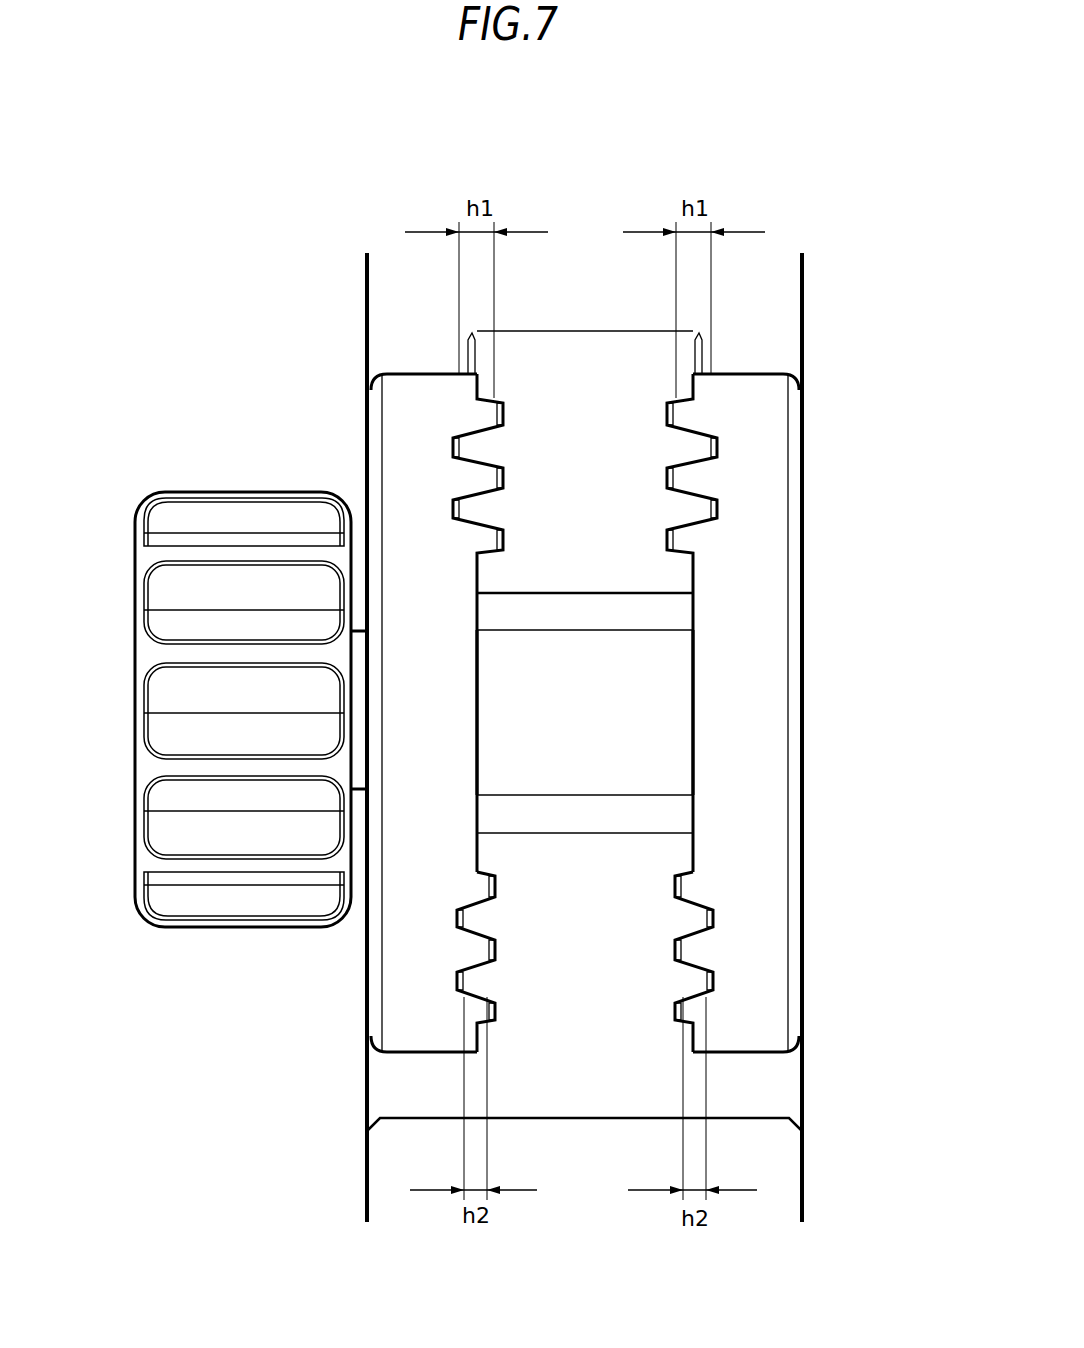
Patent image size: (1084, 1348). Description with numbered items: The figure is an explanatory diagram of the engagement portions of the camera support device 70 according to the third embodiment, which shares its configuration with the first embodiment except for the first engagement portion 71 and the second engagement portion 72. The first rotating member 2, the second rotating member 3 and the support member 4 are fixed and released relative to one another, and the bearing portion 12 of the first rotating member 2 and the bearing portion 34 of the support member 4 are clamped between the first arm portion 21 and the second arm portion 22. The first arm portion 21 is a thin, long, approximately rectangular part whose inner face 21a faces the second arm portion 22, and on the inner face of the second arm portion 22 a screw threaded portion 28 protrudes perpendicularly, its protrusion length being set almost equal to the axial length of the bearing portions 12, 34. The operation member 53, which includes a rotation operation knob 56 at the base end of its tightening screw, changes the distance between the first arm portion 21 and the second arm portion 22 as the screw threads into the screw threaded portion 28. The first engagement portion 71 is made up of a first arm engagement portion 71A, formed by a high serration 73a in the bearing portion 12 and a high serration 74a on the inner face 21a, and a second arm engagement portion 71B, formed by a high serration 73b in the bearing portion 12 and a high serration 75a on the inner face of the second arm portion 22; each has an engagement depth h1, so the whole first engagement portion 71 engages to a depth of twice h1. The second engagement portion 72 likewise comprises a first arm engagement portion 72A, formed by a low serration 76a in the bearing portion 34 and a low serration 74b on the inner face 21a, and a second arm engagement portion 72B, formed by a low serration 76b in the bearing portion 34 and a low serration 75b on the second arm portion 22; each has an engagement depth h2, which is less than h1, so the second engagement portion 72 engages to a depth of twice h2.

The first rotating member 2 is at (643, 292).
The second rotating member 3 is at (837, 650).
The support member 4 is at (343, 1175).
The bearing portion 12 is at (597, 370).
The first arm portion 21 is at (415, 607).
The inner face 21a is at (480, 698).
The second arm portion 22 is at (763, 788).
The screw threaded portion 28 is at (623, 712).
The bearing portion 34 is at (623, 870).
The operation member 53 is at (167, 453).
The rotation operation knob 56 is at (158, 655).
The camera support device 70 is at (850, 250).
The first engagement portion 71 is at (407, 317).
The first arm engagement portion 71A is at (403, 467).
The second arm engagement portion 71B is at (748, 418).
The second engagement portion 72 is at (750, 1063).
The first arm engagement portion 72A is at (437, 985).
The second arm engagement portion 72B is at (732, 985).
The high serration 73a is at (453, 445).
The high serration 73b is at (718, 440).
The high serration 74a is at (503, 410).
The low serration 74b is at (495, 1012).
The high serration 75a is at (670, 537).
The low serration 75b is at (673, 1013).
The low serration 76a is at (457, 917).
The low serration 76b is at (710, 917).